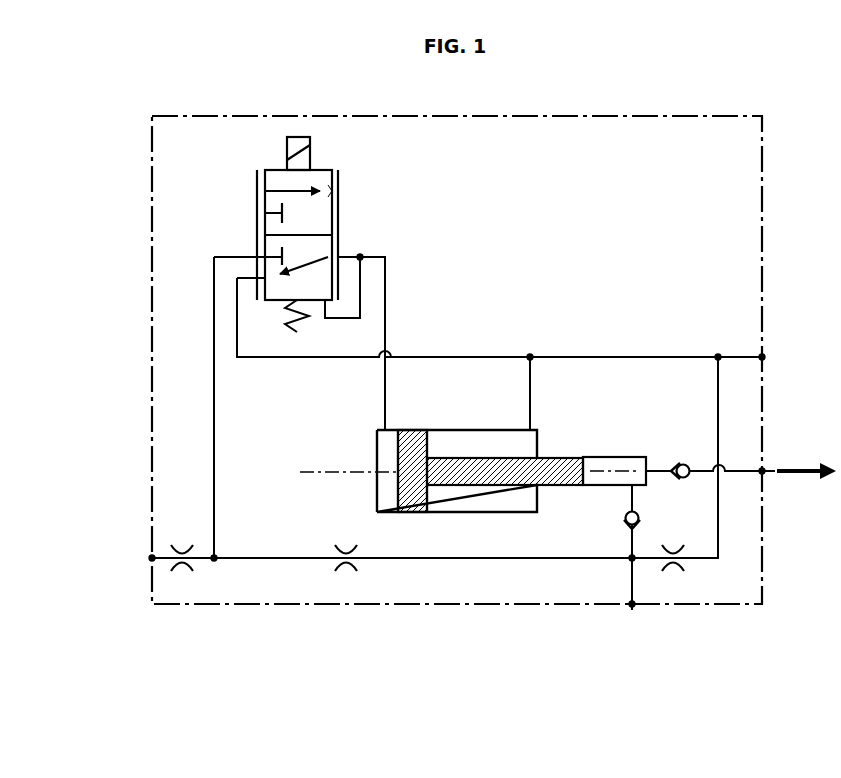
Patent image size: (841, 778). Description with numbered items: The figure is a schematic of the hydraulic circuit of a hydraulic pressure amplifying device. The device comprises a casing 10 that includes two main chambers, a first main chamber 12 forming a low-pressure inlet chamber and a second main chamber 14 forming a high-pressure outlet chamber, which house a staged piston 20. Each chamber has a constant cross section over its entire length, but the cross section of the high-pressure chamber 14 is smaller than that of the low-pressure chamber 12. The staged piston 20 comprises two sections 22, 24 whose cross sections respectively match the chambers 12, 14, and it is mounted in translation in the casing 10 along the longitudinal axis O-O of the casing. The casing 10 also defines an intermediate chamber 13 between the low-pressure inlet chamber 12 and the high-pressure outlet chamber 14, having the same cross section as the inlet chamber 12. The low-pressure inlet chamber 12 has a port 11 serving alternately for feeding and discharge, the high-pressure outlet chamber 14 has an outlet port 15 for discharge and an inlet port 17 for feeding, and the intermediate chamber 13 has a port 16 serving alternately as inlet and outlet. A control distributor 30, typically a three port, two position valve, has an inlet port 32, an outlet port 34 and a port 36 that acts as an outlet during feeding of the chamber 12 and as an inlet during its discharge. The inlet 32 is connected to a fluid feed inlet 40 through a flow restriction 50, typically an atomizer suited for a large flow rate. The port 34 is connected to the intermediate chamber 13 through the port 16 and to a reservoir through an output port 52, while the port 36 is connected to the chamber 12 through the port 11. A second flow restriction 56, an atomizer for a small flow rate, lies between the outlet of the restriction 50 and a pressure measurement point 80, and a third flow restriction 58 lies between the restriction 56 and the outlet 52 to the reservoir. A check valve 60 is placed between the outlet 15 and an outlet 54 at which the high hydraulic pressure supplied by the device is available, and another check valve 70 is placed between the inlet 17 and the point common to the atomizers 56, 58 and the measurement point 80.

The casing 10 is at (458, 428).
The port 11 is at (385, 395).
The first main chamber 12 is at (388, 452).
The intermediate chamber 13 is at (465, 500).
The second main chamber 14 is at (605, 460).
The outlet port 15 is at (668, 468).
The port 16 is at (531, 356).
The inlet port 17 is at (630, 498).
The staged piston 20 is at (490, 491).
The section 22 is at (412, 440).
The section 24 is at (562, 458).
The control distributor 30 is at (360, 228).
The inlet port 32 is at (265, 192).
The outlet port 34 is at (265, 213).
The port 36 is at (338, 190).
The fluid feed inlet 40 is at (152, 558).
The flow restriction 50 is at (184, 543).
The output port 52 is at (762, 357).
The outlet 54 is at (765, 471).
The second flow restriction 56 is at (348, 543).
The third flow restriction 58 is at (674, 574).
The check valve 60 is at (682, 484).
The check valve 70 is at (622, 526).
The pressure measurement point 80 is at (632, 610).
The longitudinal axis O is at (618, 468).